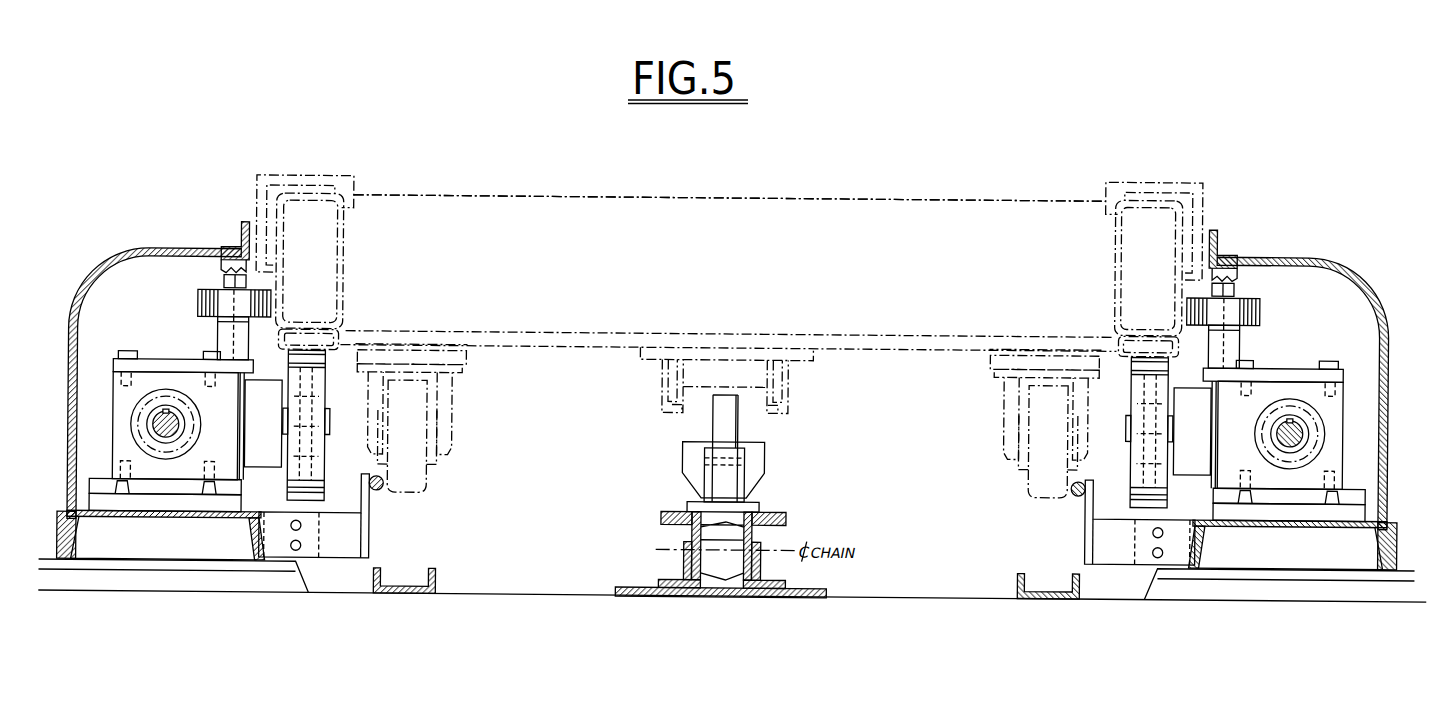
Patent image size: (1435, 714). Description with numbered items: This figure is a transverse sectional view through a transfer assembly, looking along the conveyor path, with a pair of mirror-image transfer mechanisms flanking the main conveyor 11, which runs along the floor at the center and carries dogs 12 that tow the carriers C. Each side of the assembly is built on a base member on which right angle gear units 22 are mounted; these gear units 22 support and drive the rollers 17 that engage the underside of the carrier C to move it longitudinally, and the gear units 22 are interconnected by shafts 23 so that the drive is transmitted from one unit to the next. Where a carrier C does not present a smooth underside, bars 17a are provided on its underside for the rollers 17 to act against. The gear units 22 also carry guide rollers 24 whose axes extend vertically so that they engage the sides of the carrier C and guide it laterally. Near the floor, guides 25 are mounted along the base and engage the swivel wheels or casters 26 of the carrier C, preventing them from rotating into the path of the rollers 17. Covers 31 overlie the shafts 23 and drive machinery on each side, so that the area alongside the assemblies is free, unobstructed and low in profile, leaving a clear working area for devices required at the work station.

The main conveyor 11 is at (727, 531).
The dogs 12 is at (727, 429).
The rollers 17 is at (1140, 474).
The bars 17a is at (1113, 339).
The right angle gear unit 22 is at (1295, 385).
The shafts 23 is at (1263, 615).
The guide rollers 24 is at (1277, 311).
The guides 25 is at (1077, 528).
The swivel wheels or casters 26 is at (1030, 488).
The housing cover 31 is at (1327, 257).
The carriers C is at (1019, 197).